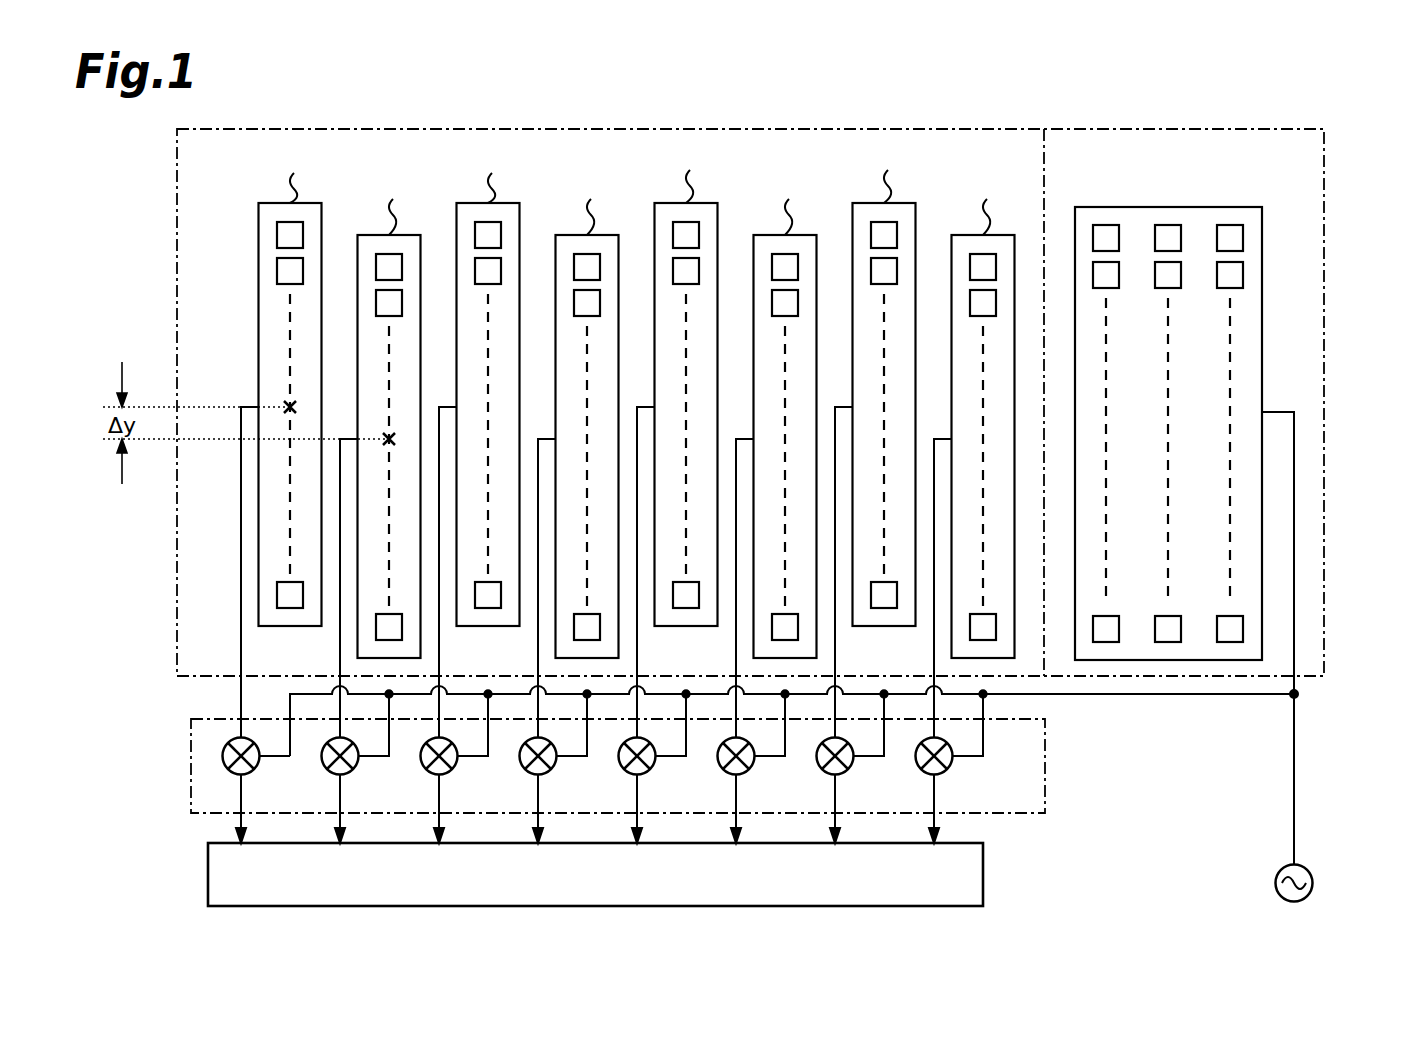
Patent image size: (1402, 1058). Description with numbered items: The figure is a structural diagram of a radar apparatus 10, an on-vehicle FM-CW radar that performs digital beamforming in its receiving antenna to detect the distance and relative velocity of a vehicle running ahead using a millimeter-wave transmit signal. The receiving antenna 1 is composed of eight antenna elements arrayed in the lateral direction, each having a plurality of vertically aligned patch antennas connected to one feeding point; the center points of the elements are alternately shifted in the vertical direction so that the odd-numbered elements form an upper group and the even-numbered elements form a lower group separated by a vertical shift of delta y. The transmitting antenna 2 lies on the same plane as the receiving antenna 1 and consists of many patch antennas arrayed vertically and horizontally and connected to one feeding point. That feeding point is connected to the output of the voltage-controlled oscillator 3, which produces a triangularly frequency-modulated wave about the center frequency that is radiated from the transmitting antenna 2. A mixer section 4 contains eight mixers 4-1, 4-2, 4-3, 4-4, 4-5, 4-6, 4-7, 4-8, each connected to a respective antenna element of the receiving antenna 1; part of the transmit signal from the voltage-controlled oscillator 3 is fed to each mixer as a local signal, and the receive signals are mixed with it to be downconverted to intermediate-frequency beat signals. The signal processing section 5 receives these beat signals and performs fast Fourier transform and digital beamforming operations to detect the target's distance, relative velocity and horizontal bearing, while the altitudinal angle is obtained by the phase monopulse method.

The receiving antenna 1 is at (177, 196).
The transmitting antenna 2 is at (1325, 505).
The voltage-controlled oscillator 3 is at (1313, 880).
The mixer section 4 is at (1045, 758).
The mixer 4-1 is at (253, 769).
The mixer 4-2 is at (352, 769).
The mixer 4-3 is at (451, 769).
The mixer 4-4 is at (550, 769).
The mixer 4-5 is at (649, 769).
The mixer 4-6 is at (748, 769).
The mixer 4-7 is at (847, 769).
The mixer 4-8 is at (946, 769).
The signal processing section 5 is at (983, 874).
The radar apparatus 10 is at (1344, 182).